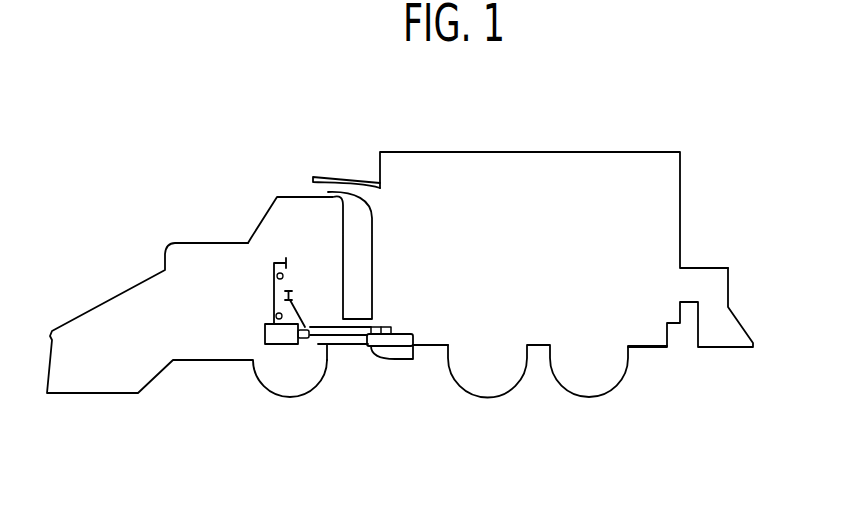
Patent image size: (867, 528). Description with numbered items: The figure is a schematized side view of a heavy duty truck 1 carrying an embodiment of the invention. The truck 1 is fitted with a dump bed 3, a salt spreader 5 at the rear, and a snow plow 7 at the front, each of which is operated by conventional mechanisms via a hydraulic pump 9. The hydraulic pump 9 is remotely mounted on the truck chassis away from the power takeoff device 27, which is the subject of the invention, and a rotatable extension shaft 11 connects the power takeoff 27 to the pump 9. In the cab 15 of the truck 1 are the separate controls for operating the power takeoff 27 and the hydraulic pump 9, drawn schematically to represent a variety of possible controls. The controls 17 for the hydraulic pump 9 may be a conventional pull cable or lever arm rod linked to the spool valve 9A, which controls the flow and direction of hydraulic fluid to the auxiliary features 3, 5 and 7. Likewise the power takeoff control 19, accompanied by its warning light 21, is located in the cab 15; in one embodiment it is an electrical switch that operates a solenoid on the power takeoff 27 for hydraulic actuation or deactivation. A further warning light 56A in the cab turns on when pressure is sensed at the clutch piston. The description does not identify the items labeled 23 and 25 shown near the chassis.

The truck 1 is at (503, 125).
The dump bed 3 is at (528, 226).
The salt spreader 5 is at (705, 283).
The snow plow 7 is at (82, 312).
The hydraulic pump 9 is at (407, 340).
The spool valve 9A is at (382, 327).
The rotatable extension shaft 11 is at (338, 345).
The cab 15 is at (278, 204).
The controls 17 is at (296, 296).
The power takeoff control 19 is at (275, 262).
The warning light 21 is at (277, 276).
The frame member 23 is at (427, 348).
The mounting bracket 25 is at (320, 343).
The power takeoff device 27 is at (265, 332).
The warning light 56A is at (275, 316).